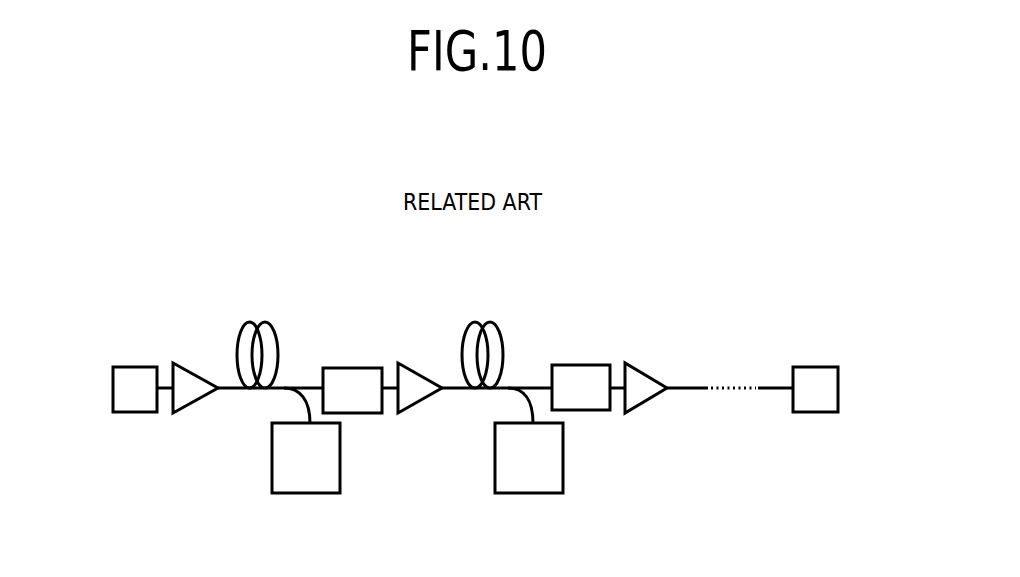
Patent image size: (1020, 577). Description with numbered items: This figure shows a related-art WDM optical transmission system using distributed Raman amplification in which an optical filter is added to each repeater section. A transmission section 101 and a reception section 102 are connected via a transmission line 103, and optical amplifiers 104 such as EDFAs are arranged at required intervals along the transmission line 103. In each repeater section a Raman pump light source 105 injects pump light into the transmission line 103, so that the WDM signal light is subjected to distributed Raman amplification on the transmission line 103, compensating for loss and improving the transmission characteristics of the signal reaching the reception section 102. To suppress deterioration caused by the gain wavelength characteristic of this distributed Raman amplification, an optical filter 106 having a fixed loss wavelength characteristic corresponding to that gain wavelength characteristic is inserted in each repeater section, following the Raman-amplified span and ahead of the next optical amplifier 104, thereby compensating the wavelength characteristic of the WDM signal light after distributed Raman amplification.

The transmission section 101 is at (128, 366).
The reception section 102 is at (820, 367).
The transmission line 103 is at (262, 323).
The optical amplifier 104 is at (196, 367).
The Raman pump light source 105 is at (308, 494).
The optical filter 106 is at (357, 368).